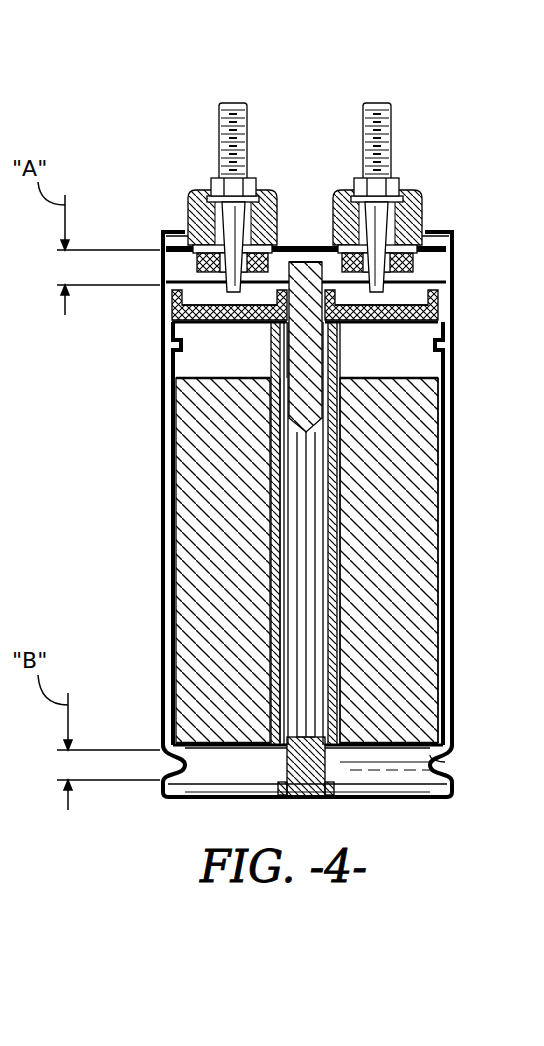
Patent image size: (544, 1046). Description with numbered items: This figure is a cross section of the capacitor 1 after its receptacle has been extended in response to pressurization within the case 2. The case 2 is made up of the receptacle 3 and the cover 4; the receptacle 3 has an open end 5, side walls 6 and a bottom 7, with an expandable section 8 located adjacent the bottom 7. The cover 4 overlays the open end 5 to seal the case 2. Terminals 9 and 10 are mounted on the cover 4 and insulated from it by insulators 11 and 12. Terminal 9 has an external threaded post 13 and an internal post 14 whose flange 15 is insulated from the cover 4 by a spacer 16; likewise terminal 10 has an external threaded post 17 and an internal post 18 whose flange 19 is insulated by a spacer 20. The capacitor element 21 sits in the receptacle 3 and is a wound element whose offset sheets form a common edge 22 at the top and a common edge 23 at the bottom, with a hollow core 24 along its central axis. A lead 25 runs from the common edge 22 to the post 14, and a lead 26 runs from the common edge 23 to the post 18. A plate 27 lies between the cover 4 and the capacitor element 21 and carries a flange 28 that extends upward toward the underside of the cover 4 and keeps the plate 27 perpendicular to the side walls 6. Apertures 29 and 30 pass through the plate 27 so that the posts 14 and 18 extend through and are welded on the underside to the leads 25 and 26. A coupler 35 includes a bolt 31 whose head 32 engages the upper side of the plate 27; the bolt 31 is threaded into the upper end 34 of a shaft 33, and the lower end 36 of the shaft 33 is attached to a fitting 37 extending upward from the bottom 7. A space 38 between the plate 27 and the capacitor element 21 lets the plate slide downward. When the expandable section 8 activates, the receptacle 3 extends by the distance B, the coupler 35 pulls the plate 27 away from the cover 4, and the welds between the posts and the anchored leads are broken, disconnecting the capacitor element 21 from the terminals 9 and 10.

The capacitor 1 is at (353, 514).
The case 2 is at (458, 632).
The receptacle 3 is at (454, 503).
The cover 4 is at (300, 268).
The open end 5 is at (448, 234).
The side walls 6 is at (167, 543).
The bottom 7 is at (395, 800).
The expandable section 8 is at (455, 763).
The terminal 9 is at (207, 184).
The terminal 10 is at (410, 183).
The insulator 11 is at (200, 220).
The insulator 12 is at (414, 262).
The threaded post 13 is at (218, 122).
The post 14 is at (205, 212).
The flange 15 is at (200, 273).
The spacer 16 is at (210, 240).
The external threaded post 17 is at (392, 122).
The internal post 18 is at (426, 265).
The flange 19 is at (455, 270).
The spacer 20 is at (420, 240).
The capacitor element 21 is at (415, 468).
The common edge 22 is at (410, 378).
The common edge 23 is at (405, 740).
The hollow core 24 is at (340, 562).
The lead 25 is at (190, 352).
The lead 26 is at (437, 348).
The plate 27 is at (188, 297).
The flange 28 is at (420, 300).
The aperture 29 is at (228, 340).
The aperture 30 is at (385, 323).
The bolt 31 is at (301, 252).
The head 32 is at (317, 292).
The shaft 33 is at (268, 412).
The upper end 34 is at (335, 350).
The coupler 35 is at (297, 475).
The lower end 36 is at (287, 707).
The fitting 37 is at (295, 760).
The space 38 is at (193, 343).